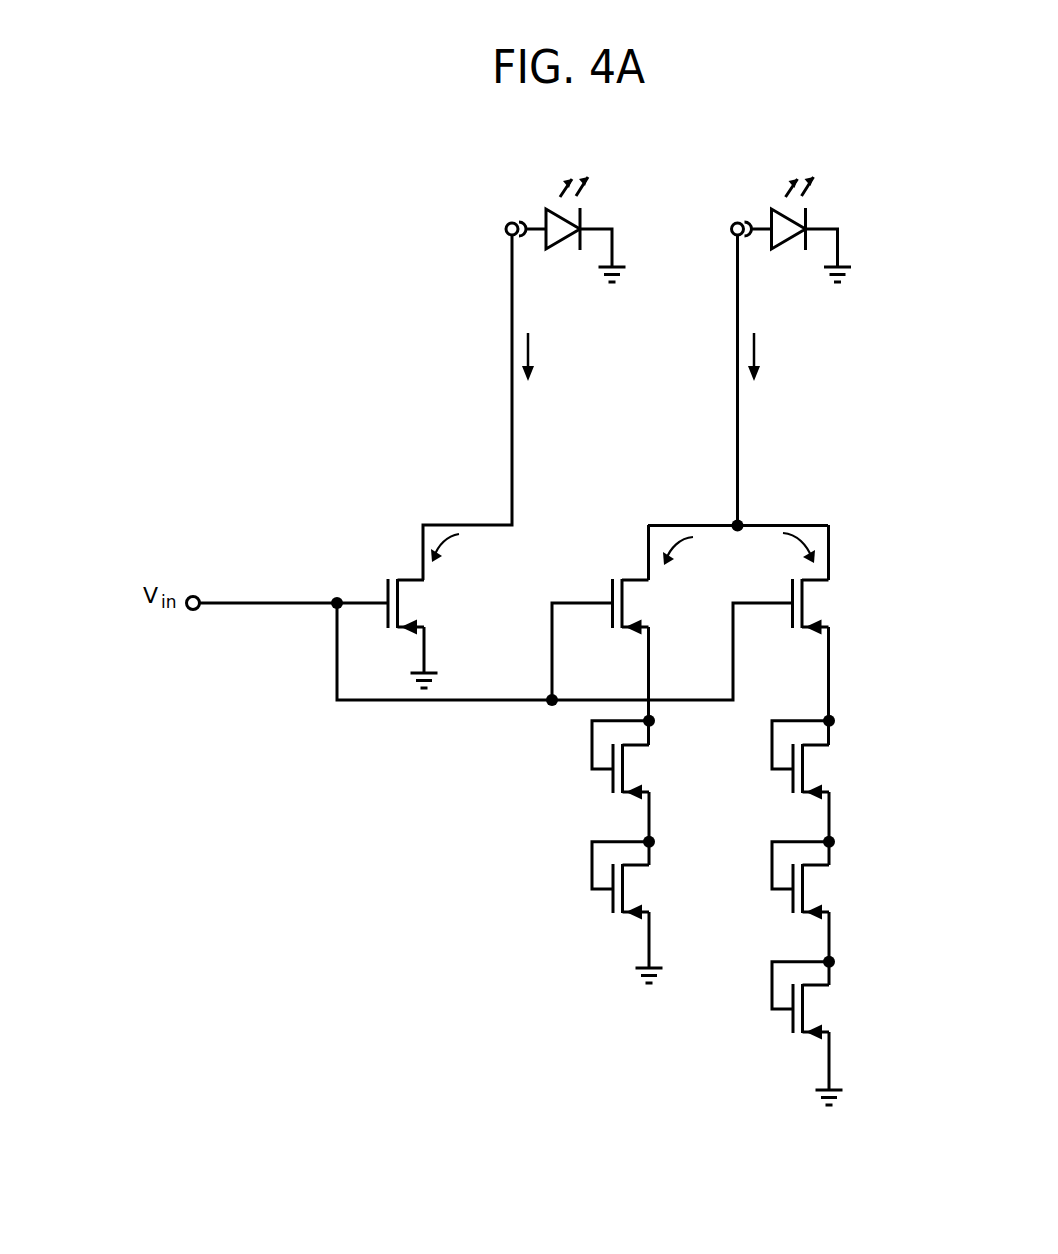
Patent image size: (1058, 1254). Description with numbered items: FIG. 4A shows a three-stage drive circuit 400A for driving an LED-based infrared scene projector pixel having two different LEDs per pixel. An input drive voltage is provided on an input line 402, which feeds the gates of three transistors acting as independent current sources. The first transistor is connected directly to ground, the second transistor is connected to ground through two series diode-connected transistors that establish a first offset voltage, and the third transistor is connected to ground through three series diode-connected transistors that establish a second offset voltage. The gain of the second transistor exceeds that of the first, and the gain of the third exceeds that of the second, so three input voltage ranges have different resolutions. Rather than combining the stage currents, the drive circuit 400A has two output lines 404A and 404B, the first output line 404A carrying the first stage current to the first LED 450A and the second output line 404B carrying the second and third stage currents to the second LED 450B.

The drive circuit 400A is at (357, 470).
The input line 402 is at (283, 601).
The first output line 404A is at (510, 352).
The second output line 404B is at (736, 352).
The first LED 450A is at (552, 207).
The second LED 450B is at (778, 207).